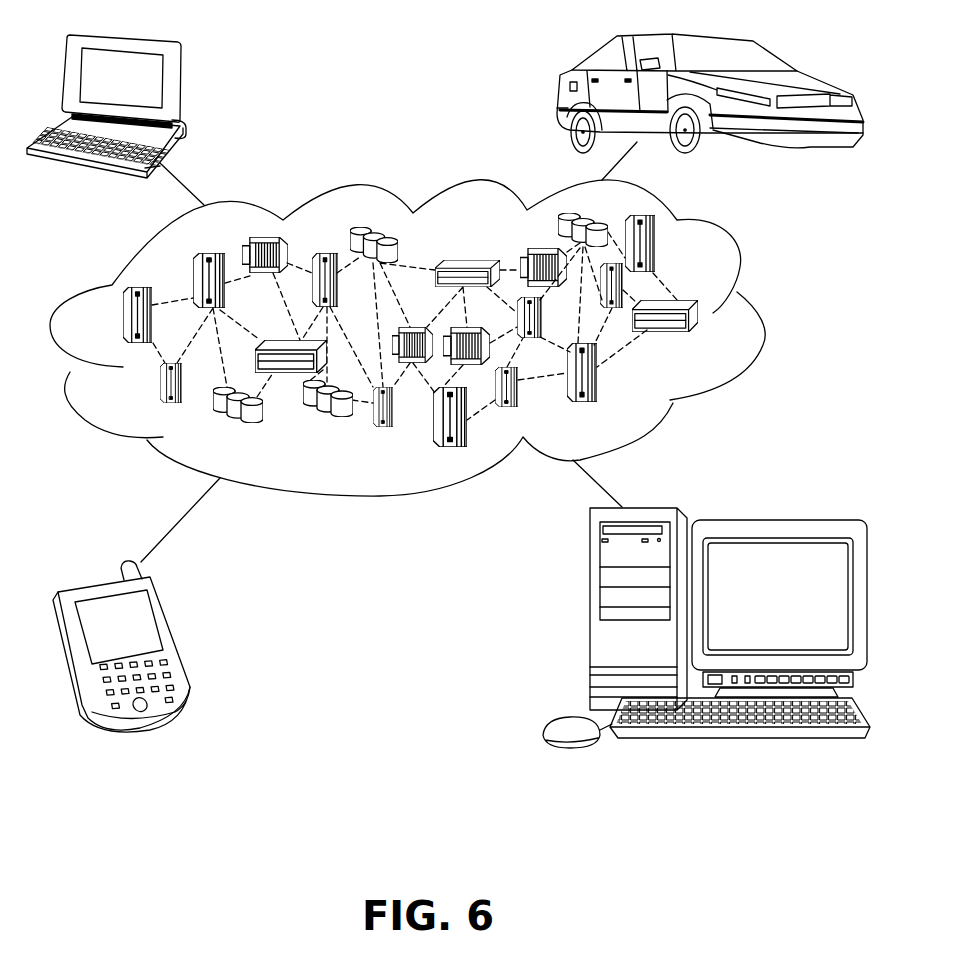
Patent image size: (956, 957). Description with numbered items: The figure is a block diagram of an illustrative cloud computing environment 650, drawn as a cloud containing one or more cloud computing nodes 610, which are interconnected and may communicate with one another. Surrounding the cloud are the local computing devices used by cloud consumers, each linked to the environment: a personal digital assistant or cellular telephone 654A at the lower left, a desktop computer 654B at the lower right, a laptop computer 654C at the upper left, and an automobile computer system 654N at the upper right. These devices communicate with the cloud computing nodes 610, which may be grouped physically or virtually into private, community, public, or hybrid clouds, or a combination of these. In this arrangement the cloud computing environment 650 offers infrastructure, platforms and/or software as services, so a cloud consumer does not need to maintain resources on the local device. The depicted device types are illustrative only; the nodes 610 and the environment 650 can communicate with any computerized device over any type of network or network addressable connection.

The cloud computing nodes 610 is at (722, 336).
The cloud computing environment 650 is at (743, 278).
The personal digital assistant (PDA) or cellular telephone 654A is at (173, 637).
The desktop computer 654B is at (590, 618).
The laptop computer 654C is at (180, 82).
The automobile computer system 654N is at (560, 88).